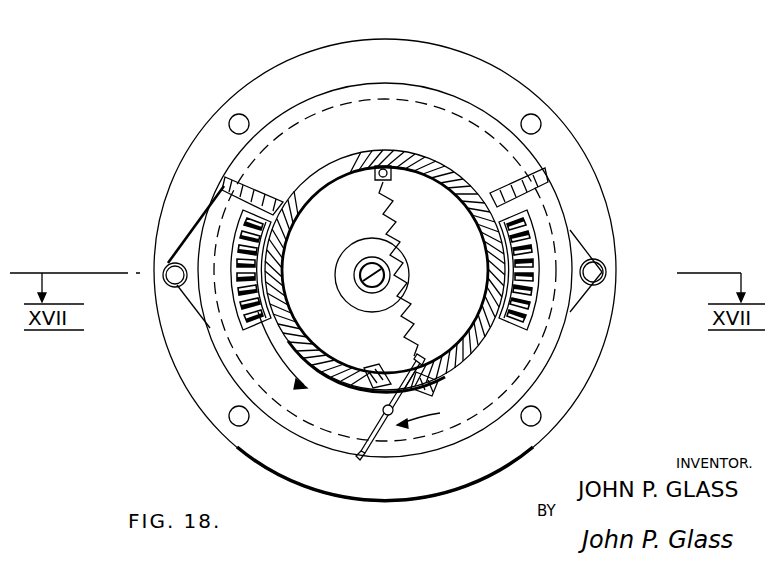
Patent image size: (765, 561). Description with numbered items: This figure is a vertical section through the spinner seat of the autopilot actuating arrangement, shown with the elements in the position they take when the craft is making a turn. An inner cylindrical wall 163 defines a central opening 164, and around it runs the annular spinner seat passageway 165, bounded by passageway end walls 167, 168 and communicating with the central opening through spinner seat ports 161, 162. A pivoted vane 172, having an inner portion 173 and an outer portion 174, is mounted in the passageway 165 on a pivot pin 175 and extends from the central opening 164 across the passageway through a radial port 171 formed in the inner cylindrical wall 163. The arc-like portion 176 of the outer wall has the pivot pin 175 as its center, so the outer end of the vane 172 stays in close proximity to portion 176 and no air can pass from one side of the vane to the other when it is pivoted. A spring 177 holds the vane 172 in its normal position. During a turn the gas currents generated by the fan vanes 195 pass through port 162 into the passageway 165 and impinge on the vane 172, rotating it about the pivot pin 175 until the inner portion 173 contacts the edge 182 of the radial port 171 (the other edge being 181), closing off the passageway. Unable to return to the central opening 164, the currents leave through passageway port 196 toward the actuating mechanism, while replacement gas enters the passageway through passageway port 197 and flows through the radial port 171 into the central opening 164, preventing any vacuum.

The spinner seat port 161 is at (247, 328).
The spinner seat port 162 is at (530, 320).
The inner cylindrical wall 163 is at (312, 354).
The central opening 164 is at (354, 221).
The spinner seat passageway 165 is at (284, 398).
The passageway end wall 167 is at (265, 191).
The passageway end wall 168 is at (505, 192).
The radial port 171 is at (413, 355).
The pivoted vane 172 is at (388, 432).
The inner portion 173 is at (400, 377).
The outer portion 174 is at (380, 426).
The pivot pin 175 is at (394, 411).
The portion of outer cylindrical wall 176 is at (363, 456).
The spring 177 is at (400, 254).
The edge of radial port 181 is at (377, 370).
The edge of radial port 182 is at (434, 386).
The fan vanes 195 is at (212, 203).
The passageway port 196 is at (563, 273).
The passageway port 197 is at (220, 293).